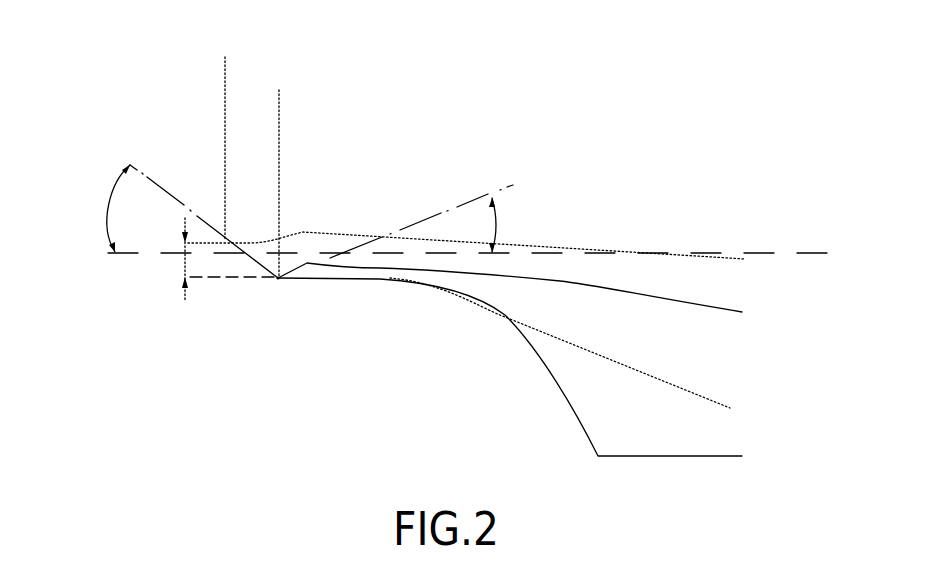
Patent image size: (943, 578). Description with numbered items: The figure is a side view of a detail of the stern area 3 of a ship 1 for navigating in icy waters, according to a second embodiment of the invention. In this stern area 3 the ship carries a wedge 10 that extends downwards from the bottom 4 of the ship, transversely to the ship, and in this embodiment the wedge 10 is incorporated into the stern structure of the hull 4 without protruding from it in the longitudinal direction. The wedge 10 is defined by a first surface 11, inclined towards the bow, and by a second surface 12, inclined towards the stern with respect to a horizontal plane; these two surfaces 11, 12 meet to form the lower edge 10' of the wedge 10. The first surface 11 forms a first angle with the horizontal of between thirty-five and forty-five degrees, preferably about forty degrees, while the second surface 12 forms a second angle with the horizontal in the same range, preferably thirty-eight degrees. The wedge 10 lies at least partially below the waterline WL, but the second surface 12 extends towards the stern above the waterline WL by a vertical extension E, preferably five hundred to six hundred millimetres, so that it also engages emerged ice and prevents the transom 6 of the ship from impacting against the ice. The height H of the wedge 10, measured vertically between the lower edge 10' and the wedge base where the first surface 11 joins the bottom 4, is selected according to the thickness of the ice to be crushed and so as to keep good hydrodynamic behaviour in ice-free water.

The ship 1 is at (791, 567).
The stern area 3 is at (257, 88).
The bottom 4 is at (627, 293).
The transom 6 is at (216, 117).
The wedge 10 is at (234, 373).
The lower edge 10' is at (315, 354).
The first surface 11 is at (308, 266).
The second surface 12 is at (248, 262).
The waterline WL is at (772, 252).
The vertical extension E is at (185, 248).
The height H is at (185, 268).